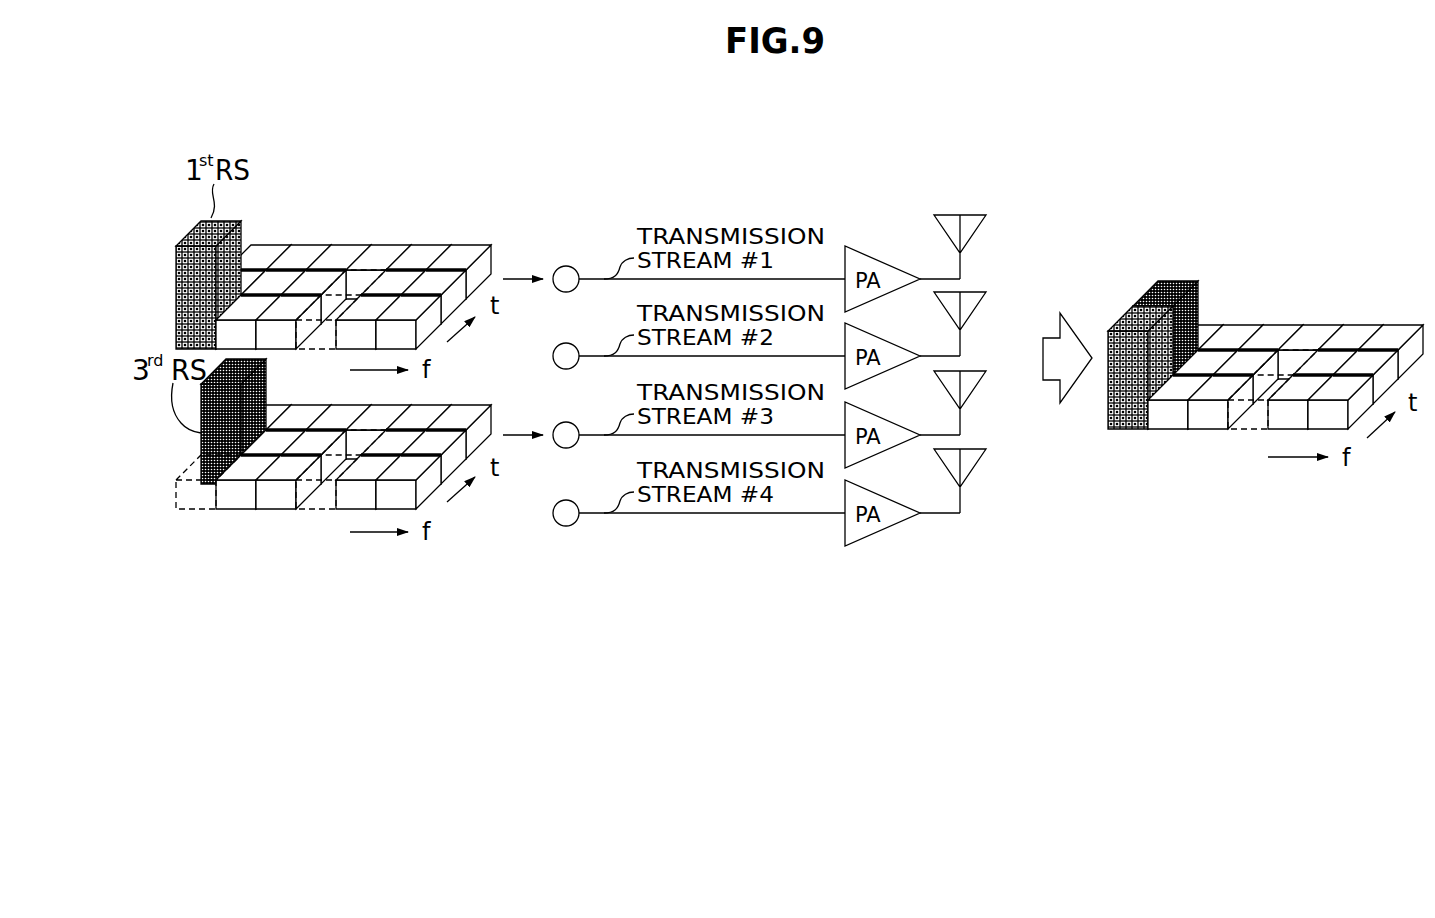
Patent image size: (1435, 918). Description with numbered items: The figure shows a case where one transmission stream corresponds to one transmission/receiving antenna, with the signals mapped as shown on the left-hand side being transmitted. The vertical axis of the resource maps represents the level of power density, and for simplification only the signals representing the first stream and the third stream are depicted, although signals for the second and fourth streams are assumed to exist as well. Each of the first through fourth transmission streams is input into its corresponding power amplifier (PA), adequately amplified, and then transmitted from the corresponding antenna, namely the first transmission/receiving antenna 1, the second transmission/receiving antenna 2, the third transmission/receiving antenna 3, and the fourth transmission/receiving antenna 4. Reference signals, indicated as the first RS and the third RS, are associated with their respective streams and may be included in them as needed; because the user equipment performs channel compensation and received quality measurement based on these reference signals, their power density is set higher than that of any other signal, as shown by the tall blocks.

The first transmission/receiving antenna 1 is at (986, 232).
The second transmission/receiving antenna 2 is at (986, 309).
The third transmission/receiving antenna 3 is at (986, 388).
The fourth transmission/receiving antenna 4 is at (986, 466).